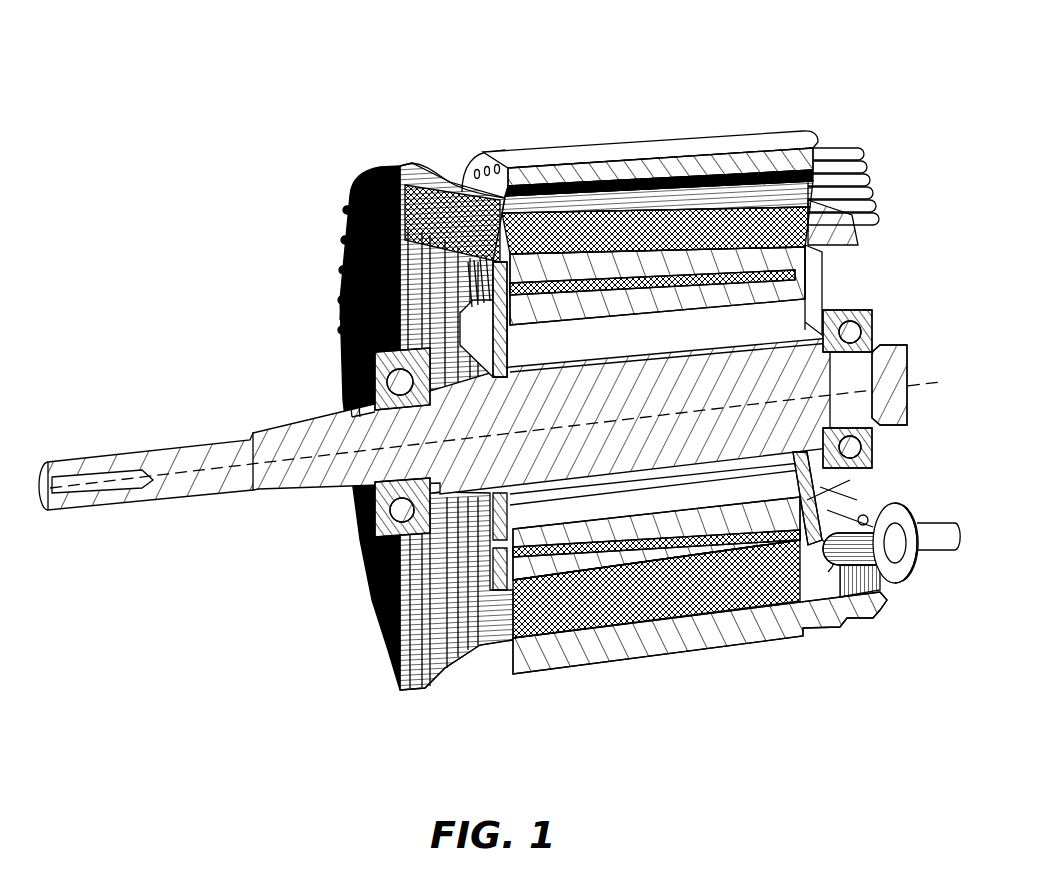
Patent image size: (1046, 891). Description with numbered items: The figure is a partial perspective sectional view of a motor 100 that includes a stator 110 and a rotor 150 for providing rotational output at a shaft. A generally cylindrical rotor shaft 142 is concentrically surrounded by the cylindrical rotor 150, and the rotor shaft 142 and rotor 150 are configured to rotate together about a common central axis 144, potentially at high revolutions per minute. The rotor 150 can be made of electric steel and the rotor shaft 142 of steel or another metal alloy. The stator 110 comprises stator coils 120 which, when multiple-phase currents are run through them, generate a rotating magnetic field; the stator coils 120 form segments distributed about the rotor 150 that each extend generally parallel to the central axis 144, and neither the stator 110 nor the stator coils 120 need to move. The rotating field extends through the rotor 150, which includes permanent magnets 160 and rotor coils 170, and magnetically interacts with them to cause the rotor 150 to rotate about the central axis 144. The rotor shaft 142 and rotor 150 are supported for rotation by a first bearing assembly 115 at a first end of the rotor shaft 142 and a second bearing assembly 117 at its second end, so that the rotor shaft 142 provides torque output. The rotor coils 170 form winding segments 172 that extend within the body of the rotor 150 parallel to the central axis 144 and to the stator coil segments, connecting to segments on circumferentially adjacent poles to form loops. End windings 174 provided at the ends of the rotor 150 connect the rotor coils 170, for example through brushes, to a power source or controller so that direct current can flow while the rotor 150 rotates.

The motor 100 is at (289, 78).
The stator 110 is at (613, 150).
The first bearing assembly 115 is at (854, 322).
The second bearing assembly 117 is at (365, 362).
The stator coils 120 is at (376, 165).
The rotor shaft 142 is at (352, 447).
The central axis 144 is at (925, 383).
The rotor 150 is at (470, 186).
The permanent magnets 160 is at (490, 272).
The rotor coils 170 is at (618, 270).
The winding segments 172 is at (649, 290).
The end windings 174 is at (328, 302).